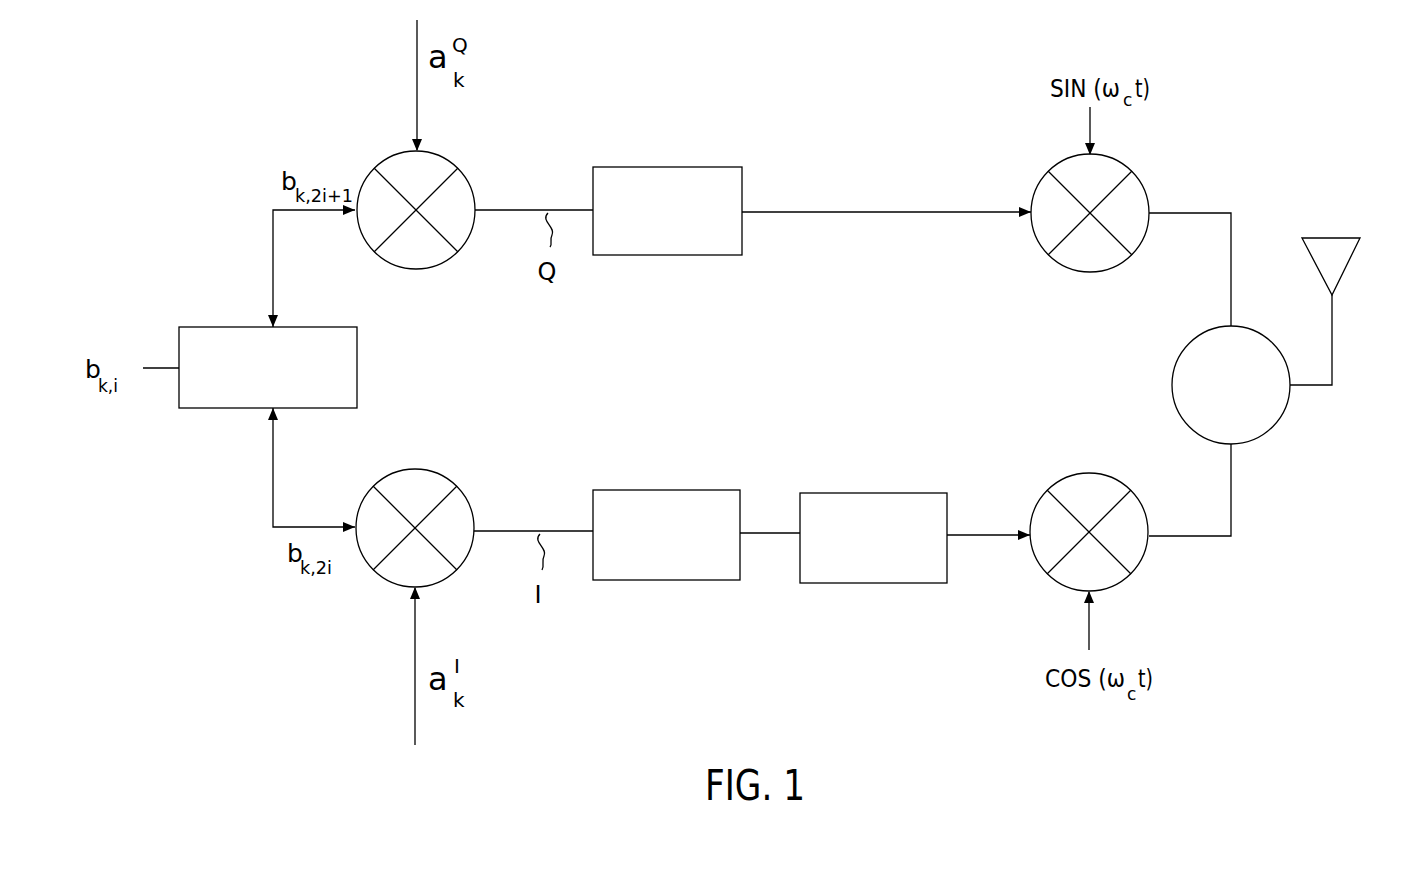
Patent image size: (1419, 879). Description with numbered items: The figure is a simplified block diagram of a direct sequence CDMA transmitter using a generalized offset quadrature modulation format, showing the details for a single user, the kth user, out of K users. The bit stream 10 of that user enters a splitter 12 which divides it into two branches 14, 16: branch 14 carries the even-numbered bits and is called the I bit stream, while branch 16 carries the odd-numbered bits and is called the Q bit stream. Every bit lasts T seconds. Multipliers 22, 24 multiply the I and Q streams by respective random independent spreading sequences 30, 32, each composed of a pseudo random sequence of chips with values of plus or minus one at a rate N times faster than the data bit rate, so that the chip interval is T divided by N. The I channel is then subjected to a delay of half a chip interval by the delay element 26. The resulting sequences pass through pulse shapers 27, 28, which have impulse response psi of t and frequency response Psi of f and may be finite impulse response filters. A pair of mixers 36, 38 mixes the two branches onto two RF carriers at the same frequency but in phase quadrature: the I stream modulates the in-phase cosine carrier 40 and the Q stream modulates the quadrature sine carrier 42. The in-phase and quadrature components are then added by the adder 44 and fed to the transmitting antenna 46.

The bit stream 10 is at (157, 369).
The splitter 12 is at (282, 399).
The branch 14 is at (273, 477).
The branch 16 is at (273, 228).
The multiplier 22 is at (457, 569).
The multiplier 24 is at (425, 269).
The delay element 26 is at (665, 581).
The pulse shaper 27 is at (878, 584).
The pulse shaper 28 is at (665, 256).
The spreading sequence 30 is at (415, 626).
The spreading sequence 32 is at (417, 29).
The mixer 36 is at (1141, 565).
The mixer 38 is at (1101, 272).
The in-phase cosine carrier 40 is at (1089, 618).
The quadrature sine carrier 42 is at (1097, 128).
The adder 44 is at (1280, 420).
The transmitting antenna 46 is at (1333, 316).